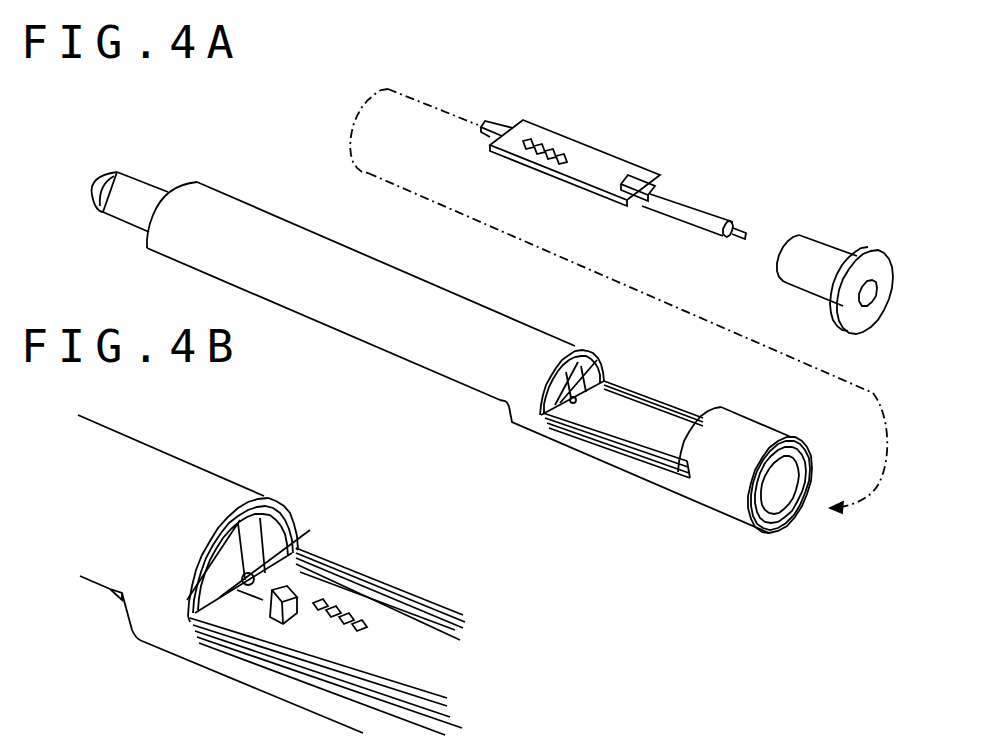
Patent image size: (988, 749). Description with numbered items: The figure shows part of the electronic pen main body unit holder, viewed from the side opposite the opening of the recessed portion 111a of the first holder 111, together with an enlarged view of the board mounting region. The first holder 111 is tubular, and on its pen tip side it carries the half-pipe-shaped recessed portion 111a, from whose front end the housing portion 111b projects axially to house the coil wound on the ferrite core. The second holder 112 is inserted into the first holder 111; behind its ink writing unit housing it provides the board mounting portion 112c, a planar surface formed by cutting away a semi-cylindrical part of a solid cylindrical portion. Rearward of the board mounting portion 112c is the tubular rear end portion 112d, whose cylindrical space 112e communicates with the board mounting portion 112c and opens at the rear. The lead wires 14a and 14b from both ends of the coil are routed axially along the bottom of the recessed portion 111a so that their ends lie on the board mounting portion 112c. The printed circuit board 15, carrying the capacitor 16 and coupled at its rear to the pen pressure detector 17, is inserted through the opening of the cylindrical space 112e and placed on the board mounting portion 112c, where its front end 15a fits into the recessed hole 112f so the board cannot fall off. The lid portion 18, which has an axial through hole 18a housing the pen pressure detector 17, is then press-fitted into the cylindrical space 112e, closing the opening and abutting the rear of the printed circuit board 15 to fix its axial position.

In FIG. 4A, the first holder 111 is at (383, 270).
In FIG. 4B, the first holder 111 is at (152, 468).
In FIG. 4A, the recessed portion 111a is at (335, 331).
In FIG. 4B, the recessed portion 111a is at (96, 597).
In FIG. 4A, the housing portion 111b is at (145, 190).
In FIG. 4A, the second holder 112 is at (672, 427).
In FIG. 4B, the second holder 112 is at (243, 500).
In FIG. 4A, the board mounting portion 112c is at (639, 435).
In FIG. 4A, the rear end portion 112d is at (797, 458).
In FIG. 4A, the cylindrical space 112e is at (776, 492).
In FIG. 4B, the recessed hole 112f is at (303, 540).
In FIG. 4A, the lead wire 14a is at (545, 402).
In FIG. 4B, the lead wire 14a is at (190, 605).
In FIG. 4A, the lead wire 14b is at (585, 360).
In FIG. 4B, the lead wire 14b is at (290, 533).
In FIG. 4A, the printed circuit board 15 is at (596, 163).
In FIG. 4B, the printed circuit board 15 is at (423, 630).
In FIG. 4B, the front end 15a is at (267, 602).
In FIG. 4A, the capacitor 16 is at (527, 133).
In FIG. 4B, the capacitor 16 is at (327, 600).
In FIG. 4A, the pen pressure detector 17 is at (680, 207).
In FIG. 4A, the lid portion 18 is at (818, 253).
In FIG. 4A, the through hole 18a is at (873, 297).